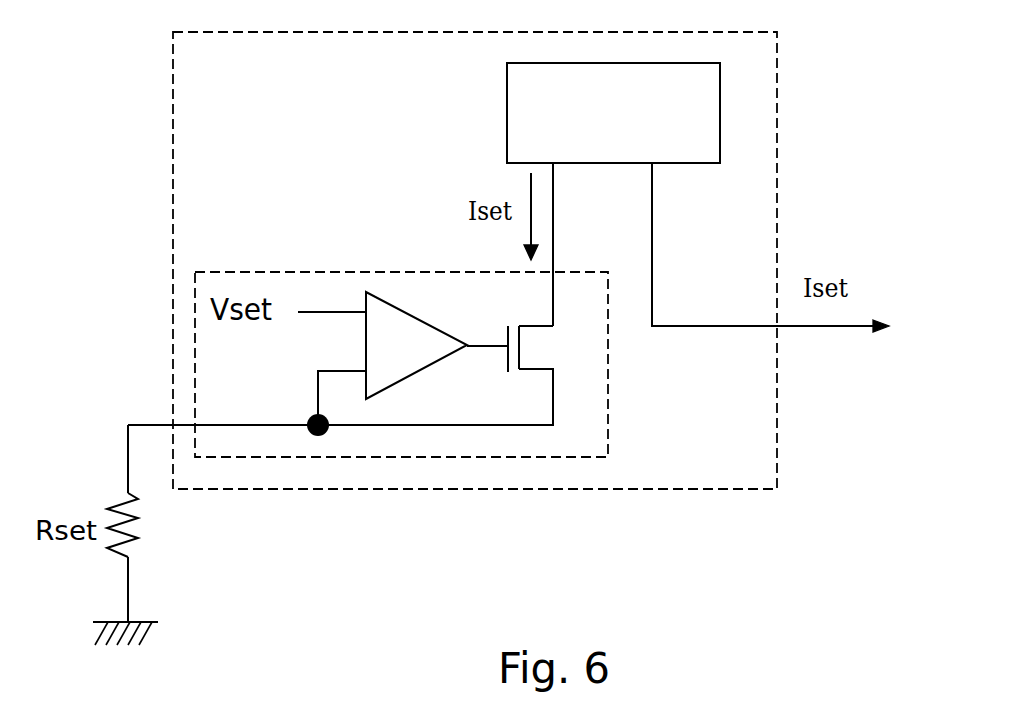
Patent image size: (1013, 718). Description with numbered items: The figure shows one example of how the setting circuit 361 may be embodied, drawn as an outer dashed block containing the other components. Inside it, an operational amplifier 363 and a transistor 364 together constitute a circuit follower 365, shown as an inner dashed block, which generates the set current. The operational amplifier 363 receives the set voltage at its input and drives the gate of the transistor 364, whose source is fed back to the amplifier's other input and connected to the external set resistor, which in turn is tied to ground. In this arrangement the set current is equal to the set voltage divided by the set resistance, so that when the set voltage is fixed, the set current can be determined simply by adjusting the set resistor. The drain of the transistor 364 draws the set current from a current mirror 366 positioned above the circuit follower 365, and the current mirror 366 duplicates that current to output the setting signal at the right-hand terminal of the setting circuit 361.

The setting circuit 361 is at (270, 108).
The operational amplifier 363 is at (429, 359).
The transistor 364 is at (456, 375).
The circuit follower 365 is at (605, 410).
The current mirror 366 is at (636, 144).